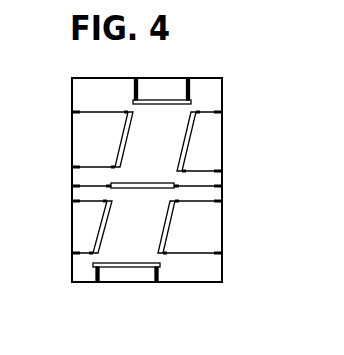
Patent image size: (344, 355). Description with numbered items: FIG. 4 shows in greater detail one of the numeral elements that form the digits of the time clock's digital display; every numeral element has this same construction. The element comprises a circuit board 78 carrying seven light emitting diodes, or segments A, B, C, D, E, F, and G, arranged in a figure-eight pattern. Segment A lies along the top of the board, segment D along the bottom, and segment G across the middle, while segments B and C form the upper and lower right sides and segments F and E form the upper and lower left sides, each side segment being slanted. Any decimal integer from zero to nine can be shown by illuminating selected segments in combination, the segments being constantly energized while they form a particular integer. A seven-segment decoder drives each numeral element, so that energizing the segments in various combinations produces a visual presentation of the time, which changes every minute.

The circuit board 78 is at (222, 78).
The segment A is at (154, 100).
The segment B is at (190, 138).
The segment C is at (168, 221).
The segment D is at (120, 268).
The segment E is at (101, 226).
The segment F is at (124, 140).
The segment G is at (161, 183).